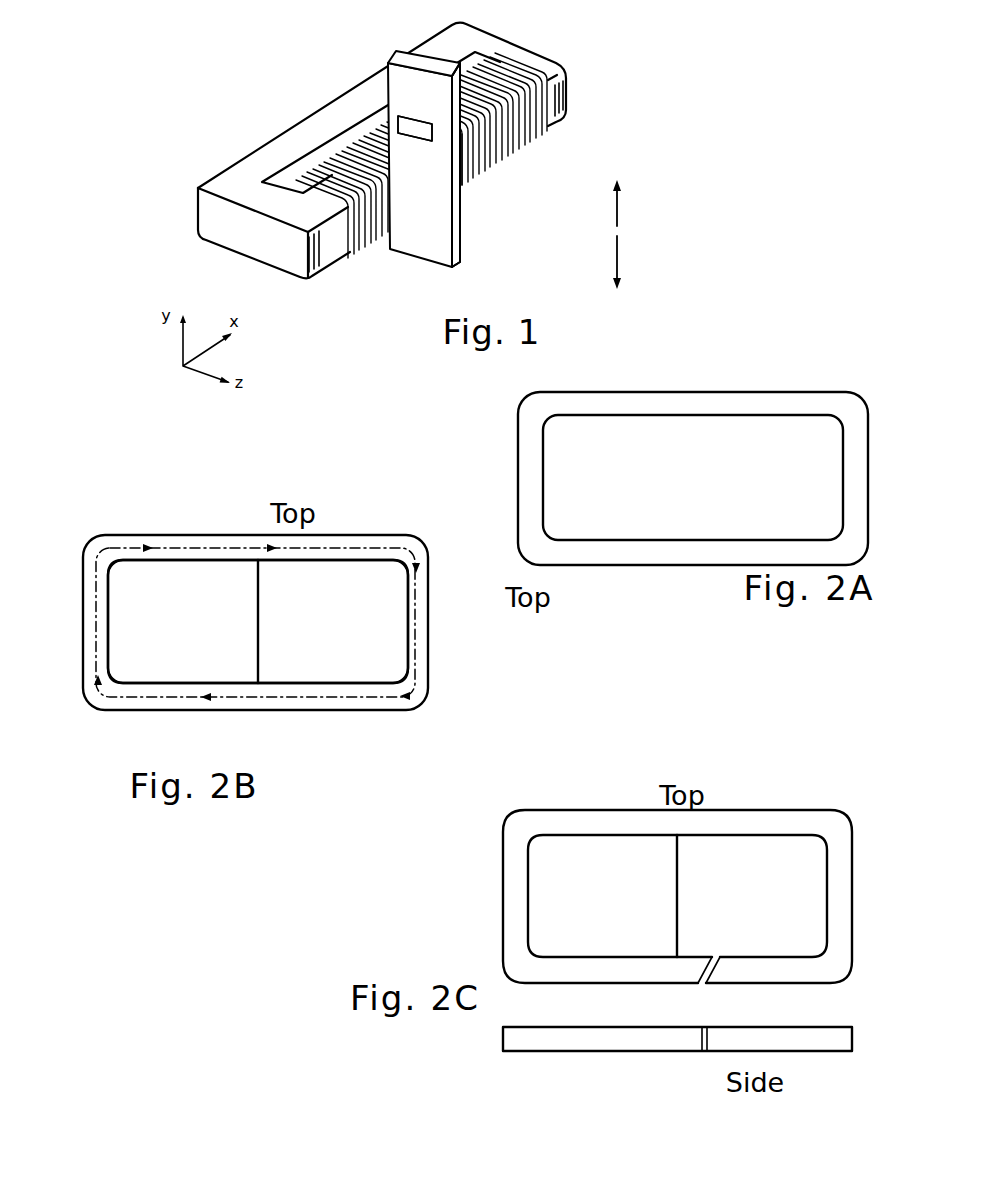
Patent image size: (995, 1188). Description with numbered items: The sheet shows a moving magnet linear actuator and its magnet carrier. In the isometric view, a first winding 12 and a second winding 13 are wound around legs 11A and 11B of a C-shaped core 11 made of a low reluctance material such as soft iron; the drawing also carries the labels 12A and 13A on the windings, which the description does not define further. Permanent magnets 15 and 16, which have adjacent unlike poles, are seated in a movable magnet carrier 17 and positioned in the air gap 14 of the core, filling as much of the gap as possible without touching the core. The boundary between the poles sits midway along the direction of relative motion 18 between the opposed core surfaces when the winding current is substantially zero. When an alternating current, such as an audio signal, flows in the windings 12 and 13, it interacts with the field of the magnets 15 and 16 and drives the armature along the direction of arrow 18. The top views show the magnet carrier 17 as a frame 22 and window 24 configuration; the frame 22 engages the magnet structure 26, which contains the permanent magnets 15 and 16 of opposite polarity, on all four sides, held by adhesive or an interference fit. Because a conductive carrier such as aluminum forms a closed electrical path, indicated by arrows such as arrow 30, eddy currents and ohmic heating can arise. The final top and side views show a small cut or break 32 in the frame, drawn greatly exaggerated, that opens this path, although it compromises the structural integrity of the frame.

In FIG. 1, the C-shaped core 11 is at (240, 248).
In FIG. 1, the leg of C-shaped core 11A is at (328, 251).
In FIG. 1, the leg of C-shaped core 11B is at (563, 100).
In FIG. 1, the first winding 12 is at (378, 243).
In FIG. 1, the coil gap / slot 12A is at (420, 112).
In FIG. 1, the second winding 13 is at (512, 158).
In FIG. 1, the coil end 13A is at (478, 181).
In FIG. 1, the air gap 14 is at (472, 200).
In FIG. 1, the permanent magnet 15 is at (407, 128).
In FIG. 2B, the permanent magnet 15 is at (206, 670).
In FIG. 2C, the permanent magnet 15 is at (608, 942).
In FIG. 1, the permanent magnet 16 is at (438, 210).
In FIG. 2B, the permanent magnet 16 is at (315, 670).
In FIG. 2C, the permanent magnet 16 is at (722, 943).
In FIG. 1, the movable magnet carrier 17 is at (418, 64).
In FIG. 2A, the movable magnet carrier 17 is at (656, 514).
In FIG. 2B, the movable magnet carrier 17 is at (255, 639).
In FIG. 2C, the movable magnet carrier 17 is at (636, 948).
In FIG. 1, the direction of relative motion 18 is at (618, 217).
In FIG. 2A, the frame 22 is at (518, 468).
In FIG. 2B, the frame 22 is at (324, 711).
In FIG. 2A, the window 24 is at (697, 494).
In FIG. 2B, the magnet structure 26 is at (200, 684).
In FIG. 2B, the arrow indicating closed electrical path 30 is at (185, 548).
In FIG. 2C, the cut or break 32 is at (707, 977).